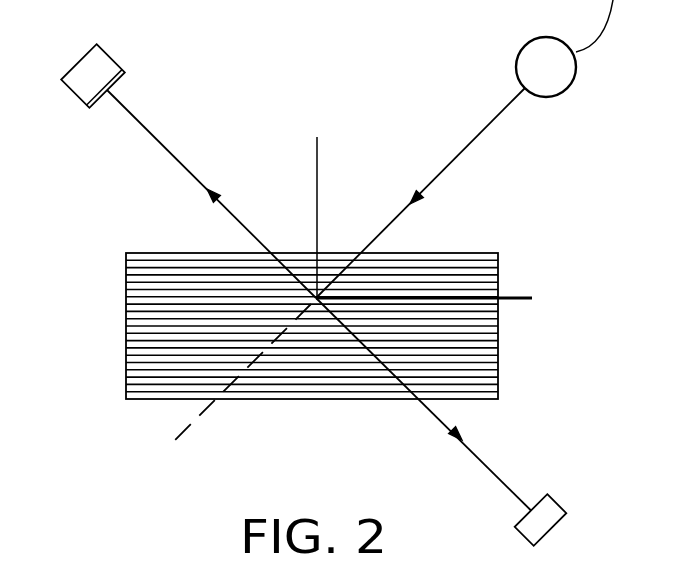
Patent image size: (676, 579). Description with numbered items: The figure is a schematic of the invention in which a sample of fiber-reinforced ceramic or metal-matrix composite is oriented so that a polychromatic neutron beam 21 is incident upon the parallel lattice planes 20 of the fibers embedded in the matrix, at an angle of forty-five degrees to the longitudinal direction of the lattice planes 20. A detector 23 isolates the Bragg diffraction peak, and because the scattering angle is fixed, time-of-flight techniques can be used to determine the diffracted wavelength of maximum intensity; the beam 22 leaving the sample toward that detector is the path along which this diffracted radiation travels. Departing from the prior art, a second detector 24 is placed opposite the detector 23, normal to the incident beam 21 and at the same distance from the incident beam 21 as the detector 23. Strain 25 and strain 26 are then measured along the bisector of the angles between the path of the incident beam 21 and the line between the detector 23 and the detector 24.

The parallel lattice planes 20 is at (126, 287).
The polychromatic neutron beam 21 is at (492, 127).
The reflected beam 22 is at (168, 147).
The detector 23 is at (108, 54).
The second detector 24 is at (558, 500).
The strain 25 is at (318, 177).
The strain 26 is at (523, 296).